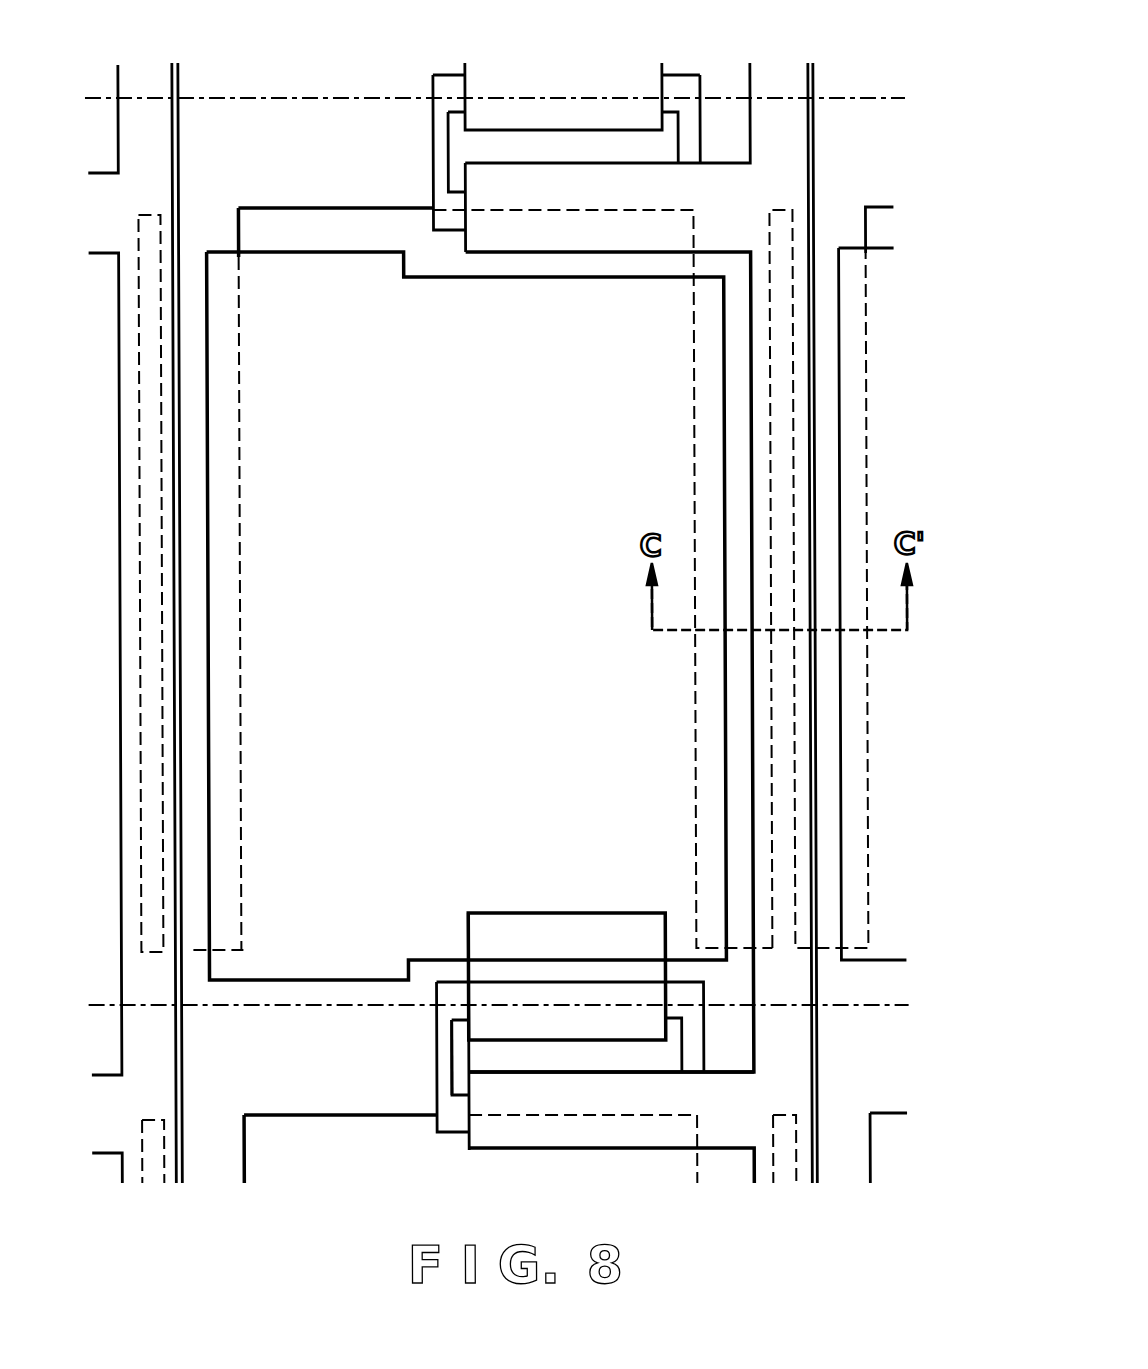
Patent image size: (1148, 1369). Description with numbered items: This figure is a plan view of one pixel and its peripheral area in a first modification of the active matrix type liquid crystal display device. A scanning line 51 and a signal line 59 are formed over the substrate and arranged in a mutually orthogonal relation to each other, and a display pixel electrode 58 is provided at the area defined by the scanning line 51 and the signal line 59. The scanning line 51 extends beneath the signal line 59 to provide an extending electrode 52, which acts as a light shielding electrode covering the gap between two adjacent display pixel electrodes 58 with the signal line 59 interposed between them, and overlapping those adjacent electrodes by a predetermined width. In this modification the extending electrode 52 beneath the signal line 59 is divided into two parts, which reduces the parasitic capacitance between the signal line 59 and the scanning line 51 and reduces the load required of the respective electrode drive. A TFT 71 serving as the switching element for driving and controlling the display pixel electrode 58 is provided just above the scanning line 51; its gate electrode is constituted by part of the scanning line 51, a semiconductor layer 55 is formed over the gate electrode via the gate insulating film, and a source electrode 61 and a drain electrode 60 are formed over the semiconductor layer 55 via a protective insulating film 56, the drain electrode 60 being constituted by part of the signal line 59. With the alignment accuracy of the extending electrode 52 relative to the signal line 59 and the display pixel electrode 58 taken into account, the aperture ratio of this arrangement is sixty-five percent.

The scanning line 51 is at (863, 1042).
The extending electrode 52 is at (194, 898).
The semiconductor layer 55 is at (441, 1130).
The protective insulating film 56 is at (458, 1086).
The display pixel electrode 58 is at (324, 268).
The signal line 59 is at (786, 72).
The drain electrode 60 is at (657, 1097).
The source electrode 61 is at (590, 1025).
The TFT 71 is at (380, 1088).